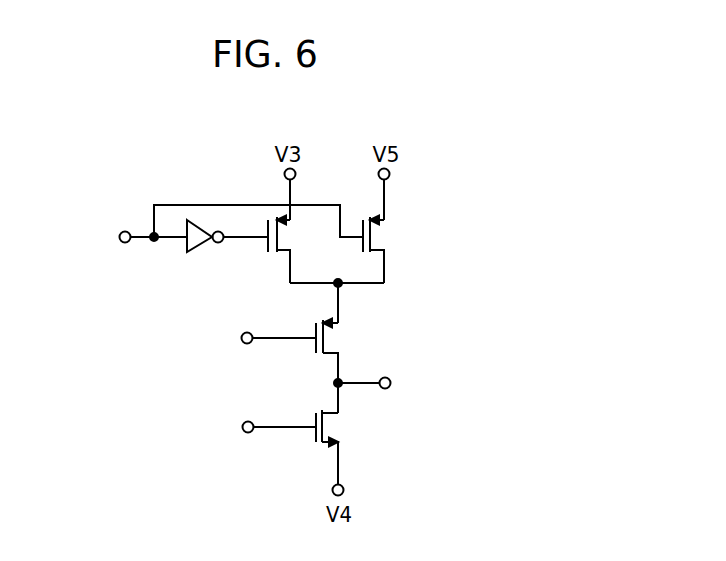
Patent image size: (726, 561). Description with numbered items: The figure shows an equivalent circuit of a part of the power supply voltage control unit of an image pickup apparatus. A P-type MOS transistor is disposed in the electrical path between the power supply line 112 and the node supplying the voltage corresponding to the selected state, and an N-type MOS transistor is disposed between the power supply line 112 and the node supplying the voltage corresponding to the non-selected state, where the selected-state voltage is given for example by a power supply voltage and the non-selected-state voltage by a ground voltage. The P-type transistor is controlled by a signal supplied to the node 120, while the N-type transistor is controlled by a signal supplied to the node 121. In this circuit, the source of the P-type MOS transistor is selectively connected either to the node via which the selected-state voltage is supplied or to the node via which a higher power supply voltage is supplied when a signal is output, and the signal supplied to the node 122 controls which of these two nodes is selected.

The node 122 is at (121, 232).
The node 120 is at (243, 333).
The node 121 is at (243, 422).
The power supply line 112 is at (390, 377).